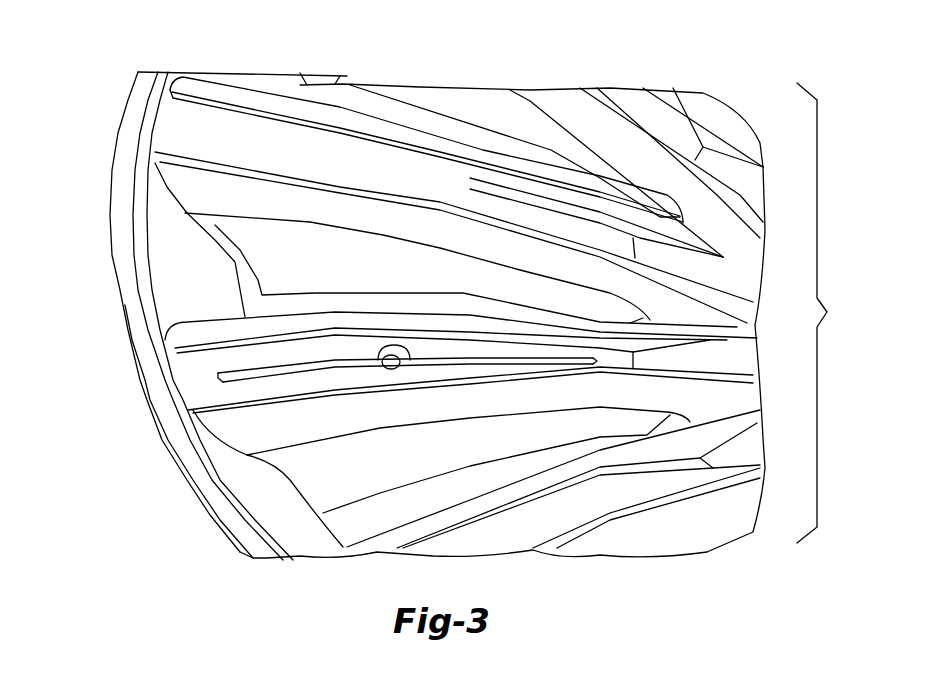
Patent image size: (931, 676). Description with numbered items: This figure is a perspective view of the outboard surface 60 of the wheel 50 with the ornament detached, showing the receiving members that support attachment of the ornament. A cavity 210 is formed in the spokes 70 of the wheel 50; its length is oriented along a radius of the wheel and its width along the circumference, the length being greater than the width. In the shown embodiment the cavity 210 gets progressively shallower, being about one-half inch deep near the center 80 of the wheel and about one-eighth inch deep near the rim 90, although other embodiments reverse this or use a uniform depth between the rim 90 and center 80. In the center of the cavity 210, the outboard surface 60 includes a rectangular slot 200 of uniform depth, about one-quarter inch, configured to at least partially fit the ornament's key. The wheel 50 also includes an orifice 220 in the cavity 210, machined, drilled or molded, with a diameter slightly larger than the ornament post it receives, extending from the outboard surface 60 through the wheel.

The wheel 50 is at (825, 313).
The outboard surface 60 is at (525, 74).
The spokes 70 is at (200, 197).
The center 80 is at (738, 278).
The rim 90 is at (128, 133).
The slot 200 is at (220, 380).
The cavity 210 is at (256, 148).
The orifice 220 is at (393, 367).